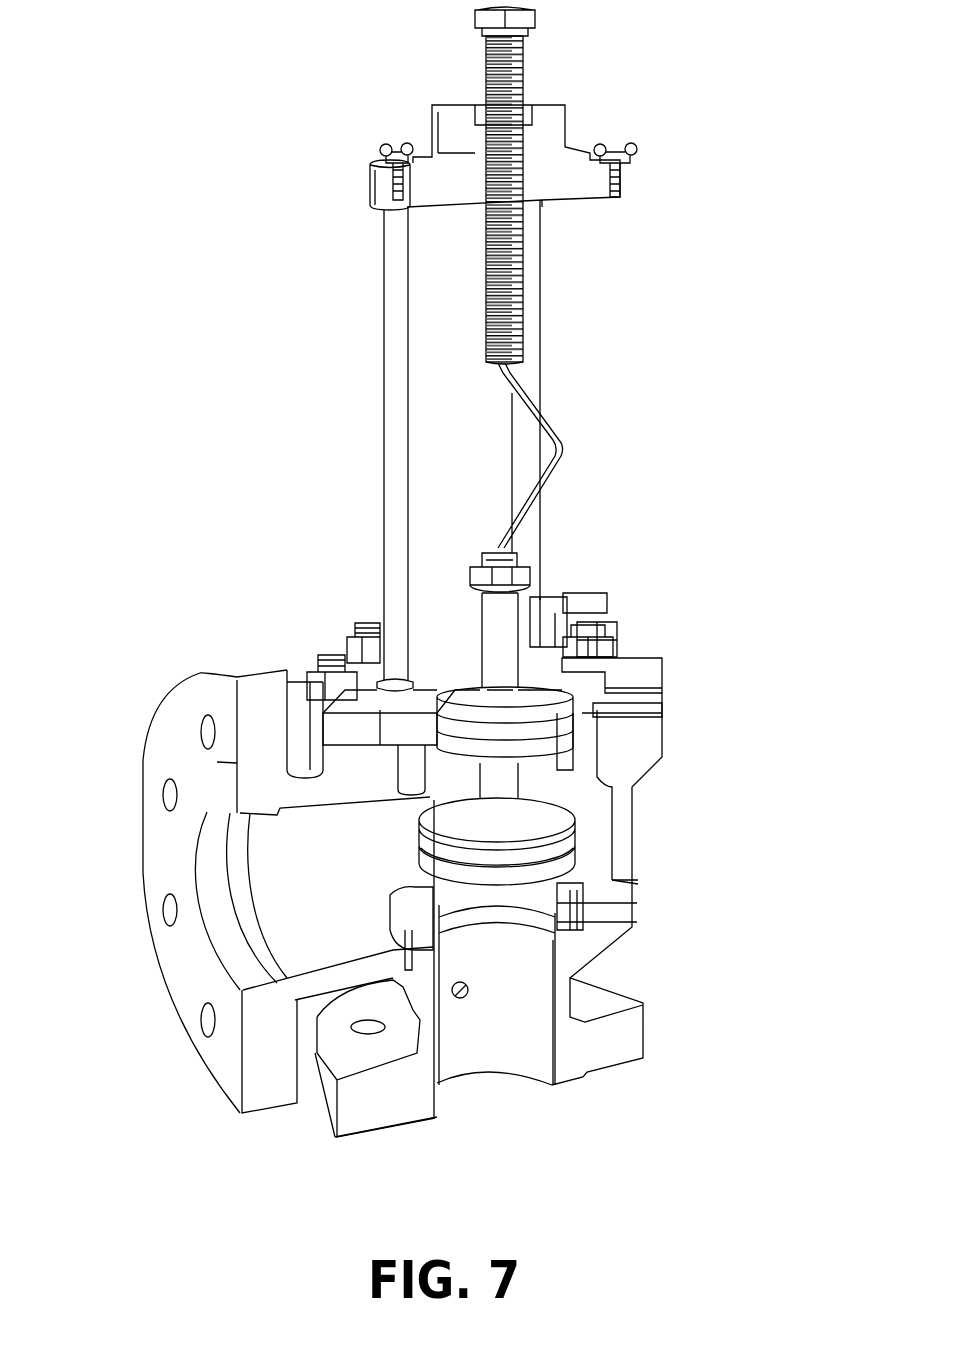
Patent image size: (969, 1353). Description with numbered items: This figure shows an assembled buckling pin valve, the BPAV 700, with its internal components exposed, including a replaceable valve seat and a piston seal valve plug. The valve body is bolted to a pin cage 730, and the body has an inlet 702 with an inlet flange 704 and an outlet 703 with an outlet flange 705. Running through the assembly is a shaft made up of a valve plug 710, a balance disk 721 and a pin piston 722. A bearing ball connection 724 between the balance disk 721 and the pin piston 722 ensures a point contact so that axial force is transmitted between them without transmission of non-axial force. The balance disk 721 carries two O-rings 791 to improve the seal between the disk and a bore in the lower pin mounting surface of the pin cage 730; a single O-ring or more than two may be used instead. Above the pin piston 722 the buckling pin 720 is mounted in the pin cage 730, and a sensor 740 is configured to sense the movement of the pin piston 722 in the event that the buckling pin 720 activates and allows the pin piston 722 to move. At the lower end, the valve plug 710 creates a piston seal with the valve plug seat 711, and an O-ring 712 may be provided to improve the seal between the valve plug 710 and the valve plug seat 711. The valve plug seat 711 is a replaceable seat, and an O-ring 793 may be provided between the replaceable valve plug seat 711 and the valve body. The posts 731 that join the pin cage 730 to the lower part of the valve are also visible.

The BPAV 700 is at (117, 198).
The inlet 702 is at (490, 1033).
The outlet 703 is at (258, 873).
The inlet flange 704 is at (602, 1053).
The outlet flange 705 is at (200, 980).
The valve plug 710 is at (540, 823).
The valve plug seat 711 is at (563, 920).
The O-ring 712 is at (567, 858).
The buckling pin 720 is at (560, 440).
The balance disk 721 is at (433, 717).
The pin piston 722 is at (490, 620).
The bearing ball connection 724 is at (500, 703).
The pin cage 730 is at (425, 273).
The post 731 is at (393, 343).
The sensor 740 is at (573, 610).
The O-rings 791 is at (560, 743).
The O-ring 793 is at (400, 907).